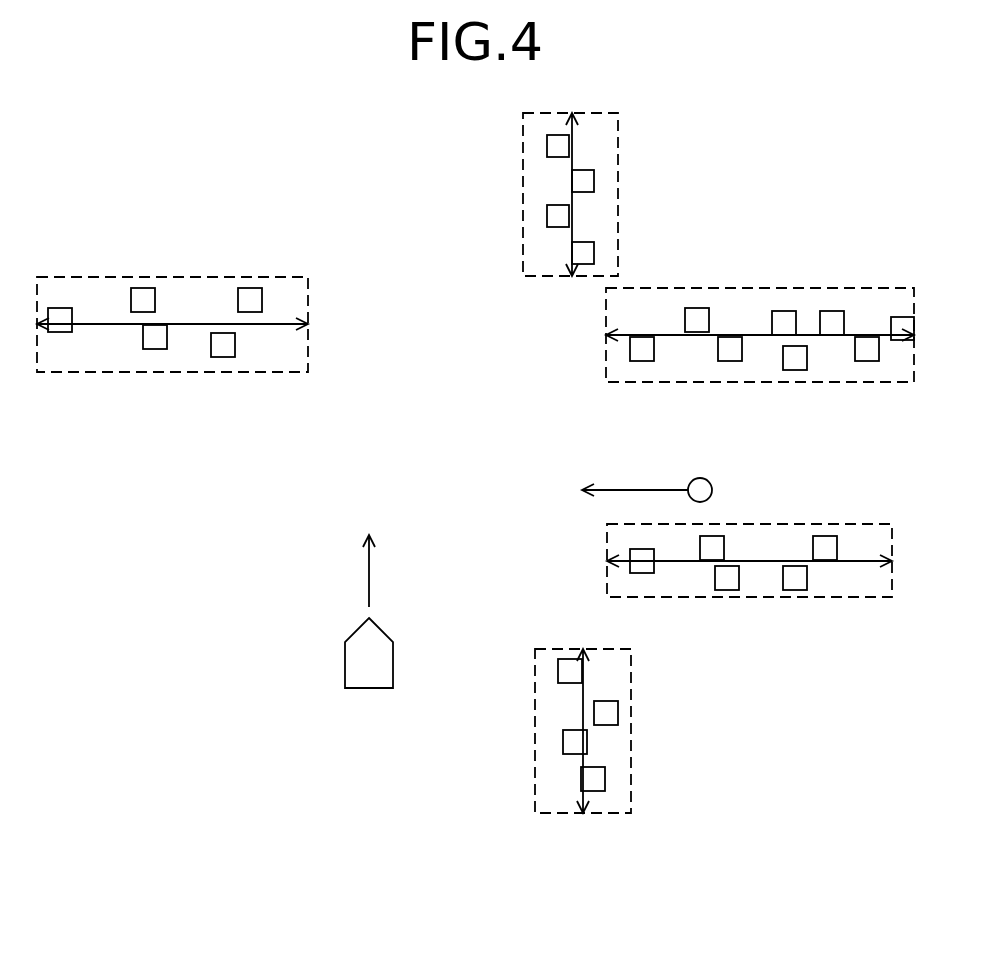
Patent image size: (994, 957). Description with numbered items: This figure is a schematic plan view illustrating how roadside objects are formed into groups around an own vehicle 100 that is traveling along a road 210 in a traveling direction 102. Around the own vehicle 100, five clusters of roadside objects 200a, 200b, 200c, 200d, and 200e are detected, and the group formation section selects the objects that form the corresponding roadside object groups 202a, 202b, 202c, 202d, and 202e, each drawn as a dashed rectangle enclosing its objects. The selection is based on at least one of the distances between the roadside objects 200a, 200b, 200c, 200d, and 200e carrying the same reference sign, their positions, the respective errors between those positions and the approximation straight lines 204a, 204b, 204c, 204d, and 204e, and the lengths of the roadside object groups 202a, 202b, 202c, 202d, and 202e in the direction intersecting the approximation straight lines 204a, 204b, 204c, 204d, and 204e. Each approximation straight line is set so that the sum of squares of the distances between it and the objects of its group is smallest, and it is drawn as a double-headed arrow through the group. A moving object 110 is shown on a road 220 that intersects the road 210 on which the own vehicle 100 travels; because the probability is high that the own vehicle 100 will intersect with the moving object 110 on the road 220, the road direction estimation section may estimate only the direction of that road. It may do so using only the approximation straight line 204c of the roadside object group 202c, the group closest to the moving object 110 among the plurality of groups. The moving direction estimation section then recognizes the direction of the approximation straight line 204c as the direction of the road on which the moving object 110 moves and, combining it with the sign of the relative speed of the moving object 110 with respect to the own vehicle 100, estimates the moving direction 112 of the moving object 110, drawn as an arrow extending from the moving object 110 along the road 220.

The own vehicle 100 is at (370, 690).
The traveling direction 102 is at (365, 565).
The moving object 110 is at (700, 478).
The moving direction 112 is at (630, 488).
The roadside objects 200a is at (778, 310).
The roadside objects 200b is at (547, 140).
The roadside objects 200c is at (818, 537).
The roadside objects 200d is at (558, 665).
The roadside objects 200e is at (137, 290).
The roadside object group 202a is at (850, 287).
The roadside object group 202b is at (620, 130).
The roadside object group 202c is at (607, 549).
The roadside object group 202d is at (572, 817).
The roadside object group 202e is at (268, 277).
The approximation straight line 204a is at (747, 333).
The approximation straight line 204b is at (572, 197).
The approximation straight line 204c is at (853, 562).
The approximation straight line 204d is at (583, 705).
The approximation straight line 204e is at (180, 327).
The road 210 is at (443, 772).
The road 220 is at (745, 425).